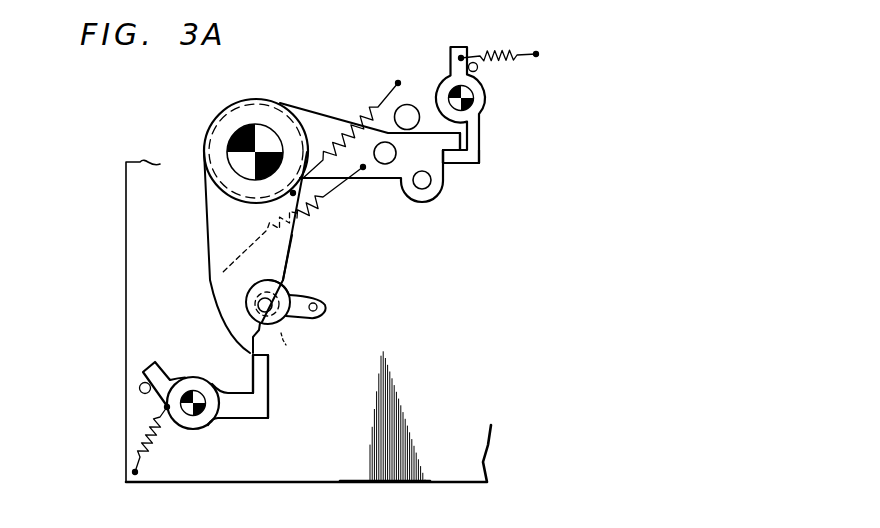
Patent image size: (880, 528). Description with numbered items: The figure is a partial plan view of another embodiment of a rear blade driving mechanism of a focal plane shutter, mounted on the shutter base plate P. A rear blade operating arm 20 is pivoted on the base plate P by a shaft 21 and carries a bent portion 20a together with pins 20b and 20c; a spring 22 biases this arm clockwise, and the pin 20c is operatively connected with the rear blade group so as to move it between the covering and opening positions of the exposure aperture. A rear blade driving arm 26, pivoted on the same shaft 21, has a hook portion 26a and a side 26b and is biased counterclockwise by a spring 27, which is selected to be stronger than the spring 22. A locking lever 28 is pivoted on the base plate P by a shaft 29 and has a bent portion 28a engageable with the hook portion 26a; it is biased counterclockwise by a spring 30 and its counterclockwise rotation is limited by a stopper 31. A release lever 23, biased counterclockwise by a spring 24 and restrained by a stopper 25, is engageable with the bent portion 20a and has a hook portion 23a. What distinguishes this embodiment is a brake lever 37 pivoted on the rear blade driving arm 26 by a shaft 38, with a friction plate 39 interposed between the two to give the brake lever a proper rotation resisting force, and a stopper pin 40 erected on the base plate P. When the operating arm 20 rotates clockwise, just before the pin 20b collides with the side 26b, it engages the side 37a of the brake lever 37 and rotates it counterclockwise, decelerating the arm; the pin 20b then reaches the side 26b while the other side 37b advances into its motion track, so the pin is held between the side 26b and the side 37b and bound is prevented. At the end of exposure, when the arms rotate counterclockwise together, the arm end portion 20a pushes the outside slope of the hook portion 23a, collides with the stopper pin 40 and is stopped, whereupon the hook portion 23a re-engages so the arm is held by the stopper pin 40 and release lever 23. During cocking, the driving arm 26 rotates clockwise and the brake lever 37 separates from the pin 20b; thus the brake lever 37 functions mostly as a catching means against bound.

The rear blade operating arm 20 is at (316, 122).
The bent portion 20a is at (455, 144).
The pin 20b is at (385, 159).
The pin 20c is at (422, 186).
The shaft 21 is at (234, 131).
The spring 22 is at (305, 222).
The release lever 23 is at (478, 105).
The hook portion 23a is at (453, 158).
The spring 24 is at (486, 53).
The stopper 25 is at (478, 69).
The rear blade driving arm 26 is at (207, 213).
The hook portion 26a is at (250, 341).
The side 26b is at (293, 254).
The spring 27 is at (364, 116).
The locking lever 28 is at (240, 415).
The bent portion 28a is at (264, 372).
The shaft 29 is at (197, 385).
The spring 30 is at (150, 432).
The stopper 31 is at (140, 387).
The brake lever 37 is at (297, 322).
The side 37a is at (286, 288).
The side 37b is at (318, 308).
The shaft 38 is at (256, 303).
The friction plate 39 is at (284, 341).
The stopper pin 40 is at (409, 108).
The shutter base plate P is at (344, 478).